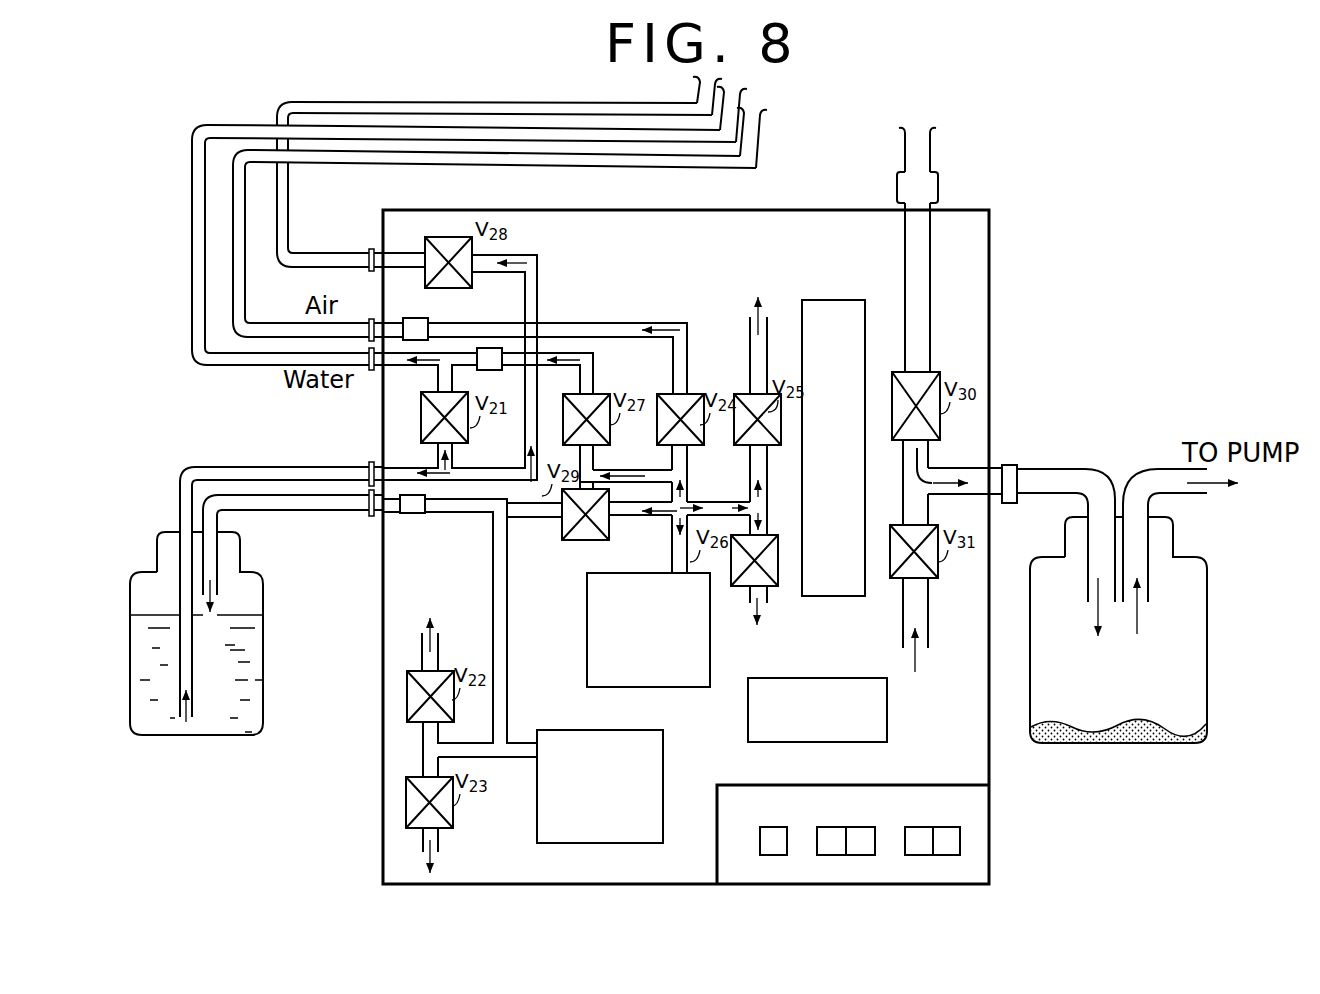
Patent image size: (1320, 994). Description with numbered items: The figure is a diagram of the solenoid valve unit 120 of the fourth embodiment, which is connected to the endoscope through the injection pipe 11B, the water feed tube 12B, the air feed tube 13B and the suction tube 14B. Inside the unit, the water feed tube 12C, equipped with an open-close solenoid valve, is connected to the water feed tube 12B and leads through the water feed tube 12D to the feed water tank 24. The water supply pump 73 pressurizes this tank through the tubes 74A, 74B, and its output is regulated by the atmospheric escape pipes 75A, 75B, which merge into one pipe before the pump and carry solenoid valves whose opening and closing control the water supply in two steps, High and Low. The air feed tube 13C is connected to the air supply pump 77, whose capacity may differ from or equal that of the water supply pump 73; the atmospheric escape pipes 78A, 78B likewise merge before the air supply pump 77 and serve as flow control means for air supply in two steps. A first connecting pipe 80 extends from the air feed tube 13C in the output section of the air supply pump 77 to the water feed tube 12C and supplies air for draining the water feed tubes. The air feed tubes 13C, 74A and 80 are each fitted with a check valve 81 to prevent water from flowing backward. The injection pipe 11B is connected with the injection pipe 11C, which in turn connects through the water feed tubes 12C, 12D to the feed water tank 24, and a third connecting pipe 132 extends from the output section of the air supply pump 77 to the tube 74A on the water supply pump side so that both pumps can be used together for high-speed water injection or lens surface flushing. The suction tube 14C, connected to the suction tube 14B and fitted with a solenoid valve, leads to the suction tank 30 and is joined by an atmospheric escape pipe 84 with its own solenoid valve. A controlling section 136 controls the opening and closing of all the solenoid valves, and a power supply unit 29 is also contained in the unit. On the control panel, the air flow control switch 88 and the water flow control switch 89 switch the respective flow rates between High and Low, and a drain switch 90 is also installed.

The injection pipe 11B is at (416, 77).
The water feed tube 12B is at (228, 126).
The air feed tube 13B is at (412, 145).
The injection pipe 11C is at (551, 233).
The water feed tube 12C is at (440, 377).
The air feed tube 13C is at (589, 326).
The water feed tube 12D is at (233, 467).
The suction tube 14B is at (930, 152).
The suction tube 14C is at (922, 254).
The solenoid valve unit 120 is at (992, 220).
The feed water tank 24 is at (263, 668).
The power supply unit 29 is at (850, 344).
The suction tank 30 is at (1207, 614).
The water supply pump 73 is at (563, 732).
The tube 74A is at (458, 510).
The tube 74B is at (247, 498).
The atmospheric escape pipe 75A is at (422, 645).
The atmospheric escape pipe 75B is at (420, 840).
The air supply pump 77 is at (616, 553).
The atmospheric escape pipe 78A is at (750, 325).
The atmospheric escape pipe 78B is at (764, 600).
The first connecting pipe 80 is at (637, 468).
The check valve 81 is at (416, 513).
The atmospheric escape pipe 84 is at (930, 621).
The air flow control switch 88 is at (875, 830).
The water flow control switch 89 is at (905, 830).
The drain switch 90 is at (787, 838).
The third connecting pipe 132 is at (532, 518).
The controlling section 136 is at (838, 662).